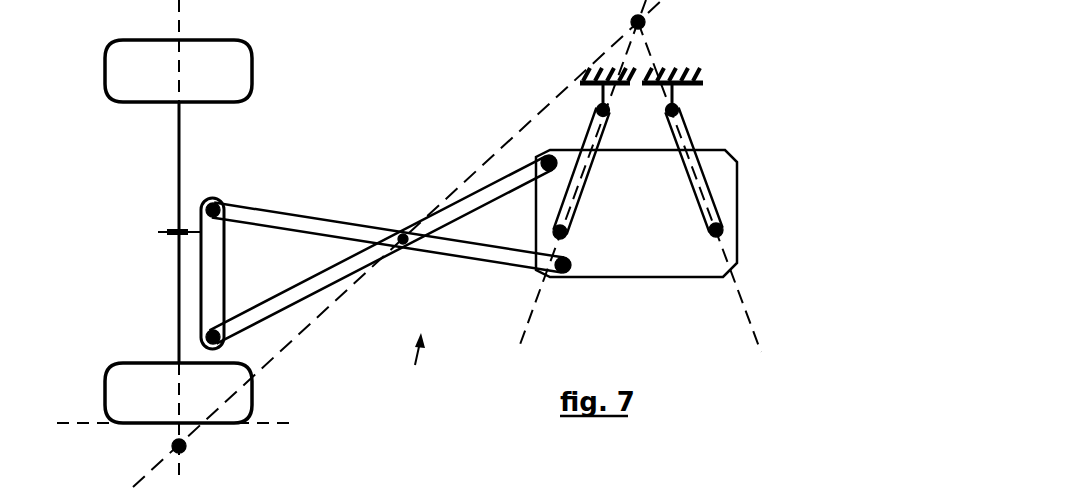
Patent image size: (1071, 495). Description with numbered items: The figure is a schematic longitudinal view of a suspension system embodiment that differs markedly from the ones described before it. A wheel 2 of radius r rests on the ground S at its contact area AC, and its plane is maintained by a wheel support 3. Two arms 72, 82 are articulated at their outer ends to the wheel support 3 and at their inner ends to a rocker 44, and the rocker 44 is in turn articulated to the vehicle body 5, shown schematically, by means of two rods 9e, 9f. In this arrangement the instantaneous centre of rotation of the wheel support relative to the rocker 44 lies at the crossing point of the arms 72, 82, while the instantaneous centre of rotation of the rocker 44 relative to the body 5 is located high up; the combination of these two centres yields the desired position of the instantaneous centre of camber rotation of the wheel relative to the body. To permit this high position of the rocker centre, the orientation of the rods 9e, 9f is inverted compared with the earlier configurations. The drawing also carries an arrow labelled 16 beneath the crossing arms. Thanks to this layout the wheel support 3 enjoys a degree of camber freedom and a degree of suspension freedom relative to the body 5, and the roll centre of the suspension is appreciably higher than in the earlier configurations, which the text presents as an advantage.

The wheel 2 is at (105, 77).
The wheel support 3 is at (208, 285).
The arm 72 is at (291, 214).
The arm 82 is at (343, 266).
The rocker 44 is at (625, 268).
The body 5 is at (705, 80).
The rod 9e is at (582, 177).
The rod 9f is at (684, 168).
The direction arrow 16 is at (416, 365).
The ground S is at (105, 422).
The contact area AC is at (157, 424).